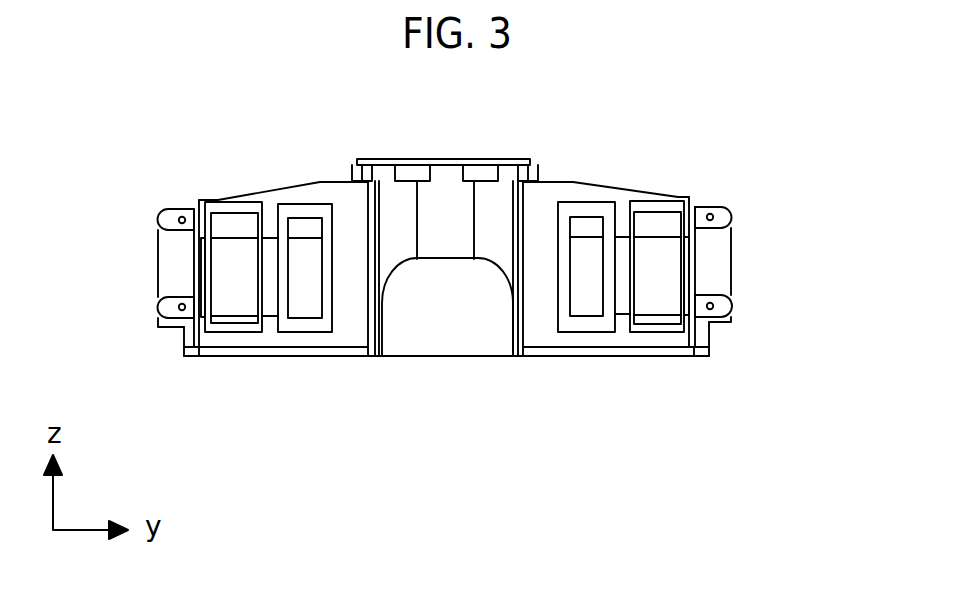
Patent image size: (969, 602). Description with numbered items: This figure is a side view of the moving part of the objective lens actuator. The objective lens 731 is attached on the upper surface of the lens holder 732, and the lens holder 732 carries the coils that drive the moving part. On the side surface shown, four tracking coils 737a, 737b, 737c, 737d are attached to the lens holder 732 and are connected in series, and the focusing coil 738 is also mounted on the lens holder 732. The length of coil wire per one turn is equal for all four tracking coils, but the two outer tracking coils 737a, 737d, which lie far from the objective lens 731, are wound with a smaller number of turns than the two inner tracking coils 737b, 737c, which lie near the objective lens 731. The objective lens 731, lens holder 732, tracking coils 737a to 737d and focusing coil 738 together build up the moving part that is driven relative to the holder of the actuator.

The objective lens 731 is at (450, 168).
The lens holder 732 is at (402, 213).
The tracking coil 737a is at (230, 325).
The tracking coil 737b is at (297, 325).
The tracking coil 737c is at (593, 323).
The tracking coil 737d is at (655, 323).
The focusing coil 738 is at (227, 293).